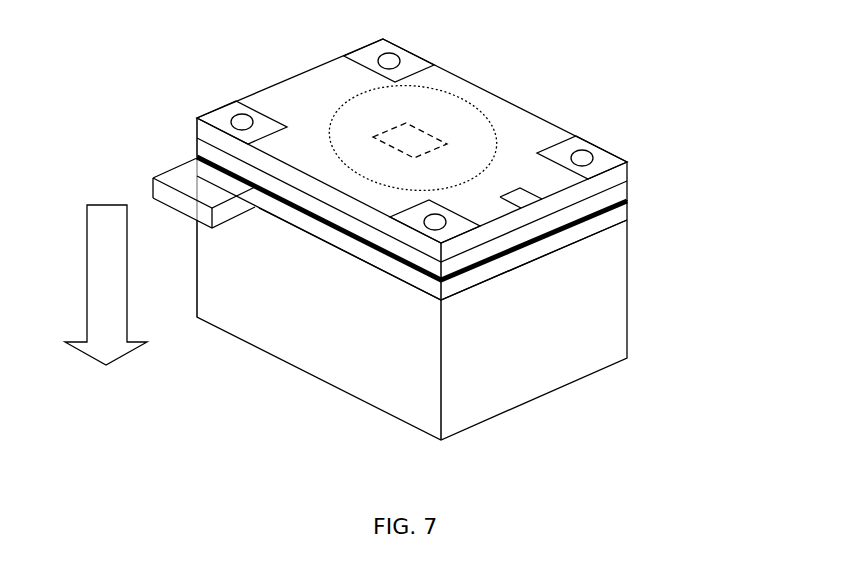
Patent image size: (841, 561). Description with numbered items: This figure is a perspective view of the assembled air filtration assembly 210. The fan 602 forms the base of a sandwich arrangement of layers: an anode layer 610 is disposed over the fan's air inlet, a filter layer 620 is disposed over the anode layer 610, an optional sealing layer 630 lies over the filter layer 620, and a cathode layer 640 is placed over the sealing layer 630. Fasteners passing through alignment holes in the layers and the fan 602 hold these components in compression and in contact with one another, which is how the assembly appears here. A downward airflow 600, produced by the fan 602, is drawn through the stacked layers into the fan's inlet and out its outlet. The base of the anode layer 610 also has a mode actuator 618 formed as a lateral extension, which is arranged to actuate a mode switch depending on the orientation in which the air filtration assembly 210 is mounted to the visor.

The air filtration assembly 210 is at (329, 407).
The downward airflow 600 is at (87, 268).
The fan 602 is at (550, 378).
The anode layer 610 is at (627, 220).
The mode actuator 618 is at (186, 182).
The filter layer 620 is at (627, 202).
The sealing layer 630 is at (627, 181).
The cathode layer 640 is at (598, 158).